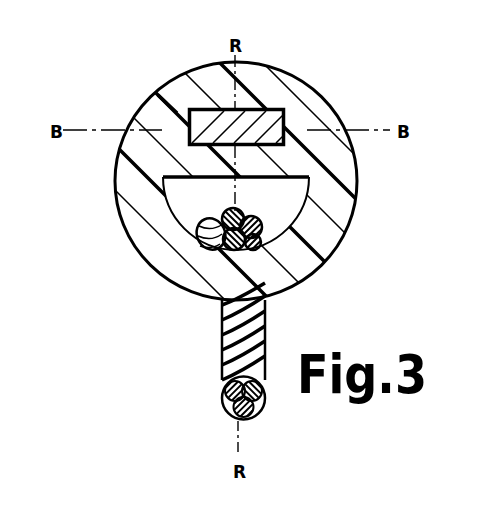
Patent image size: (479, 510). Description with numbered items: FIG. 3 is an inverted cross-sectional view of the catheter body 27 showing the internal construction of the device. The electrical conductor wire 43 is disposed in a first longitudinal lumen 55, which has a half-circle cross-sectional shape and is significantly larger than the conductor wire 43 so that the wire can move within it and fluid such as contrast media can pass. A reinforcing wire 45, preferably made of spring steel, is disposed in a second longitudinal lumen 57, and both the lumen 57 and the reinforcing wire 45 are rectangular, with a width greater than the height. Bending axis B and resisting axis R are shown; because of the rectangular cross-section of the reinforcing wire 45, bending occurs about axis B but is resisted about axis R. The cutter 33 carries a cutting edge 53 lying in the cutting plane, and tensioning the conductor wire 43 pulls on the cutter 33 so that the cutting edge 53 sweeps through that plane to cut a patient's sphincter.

The body 27 is at (148, 249).
The cutter 33 is at (260, 331).
The electrical conductor wire 43 is at (250, 212).
The reinforcing wire 45 is at (287, 109).
The cutting edge 53 is at (234, 426).
The first longitudinal lumen 55 is at (198, 207).
The second longitudinal lumen 57 is at (172, 119).